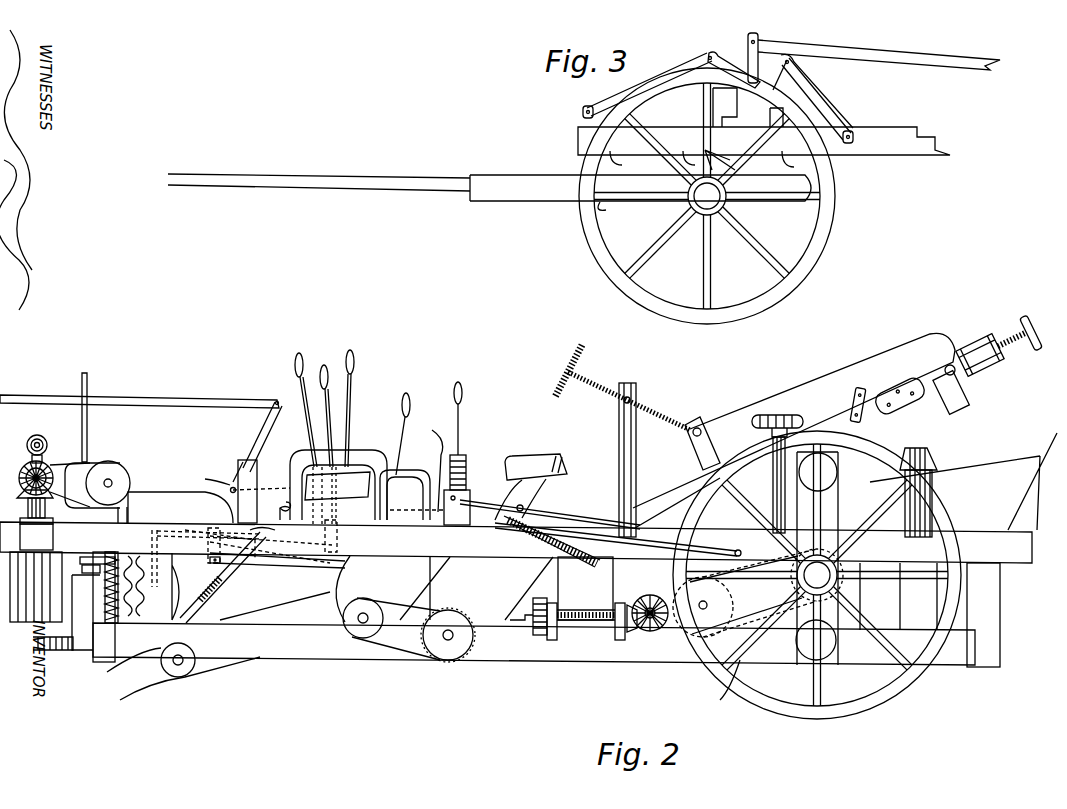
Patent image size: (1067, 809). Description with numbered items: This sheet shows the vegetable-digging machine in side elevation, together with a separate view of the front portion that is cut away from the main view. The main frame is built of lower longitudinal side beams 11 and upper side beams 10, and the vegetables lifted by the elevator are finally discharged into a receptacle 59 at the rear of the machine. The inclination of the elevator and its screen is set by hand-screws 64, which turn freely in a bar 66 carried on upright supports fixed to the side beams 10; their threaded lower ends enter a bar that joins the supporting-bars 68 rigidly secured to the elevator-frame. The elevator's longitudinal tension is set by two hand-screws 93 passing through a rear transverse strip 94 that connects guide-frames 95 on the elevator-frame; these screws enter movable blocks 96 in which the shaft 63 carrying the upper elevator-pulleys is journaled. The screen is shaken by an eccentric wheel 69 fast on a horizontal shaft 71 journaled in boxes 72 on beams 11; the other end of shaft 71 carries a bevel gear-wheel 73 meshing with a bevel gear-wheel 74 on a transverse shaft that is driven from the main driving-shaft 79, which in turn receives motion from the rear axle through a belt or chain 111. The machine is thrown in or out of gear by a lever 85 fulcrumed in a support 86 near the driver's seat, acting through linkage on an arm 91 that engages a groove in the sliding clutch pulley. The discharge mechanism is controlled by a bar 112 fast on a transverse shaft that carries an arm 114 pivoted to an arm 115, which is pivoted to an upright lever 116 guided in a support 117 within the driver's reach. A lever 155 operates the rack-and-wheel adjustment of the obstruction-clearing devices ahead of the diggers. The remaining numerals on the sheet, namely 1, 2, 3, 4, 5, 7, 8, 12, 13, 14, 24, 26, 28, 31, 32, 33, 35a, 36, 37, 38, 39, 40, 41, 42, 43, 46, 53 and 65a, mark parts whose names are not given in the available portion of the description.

In FIG. 2, the hand lever 1 is at (333, 431).
In FIG. 2, the link 2 is at (212, 528).
In FIG. 2, the link 3 is at (224, 553).
In FIG. 2, the bracket 4 is at (205, 558).
In FIG. 2, the lever 5 is at (228, 575).
In FIG. 2, the rod 7 is at (244, 541).
In FIG. 2, the spring 8 is at (200, 598).
In FIG. 2, the side beams 10 is at (516, 542).
In FIG. 2, the longitudinal side beams 11 is at (504, 608).
In FIG. 2, the frame plate 12 is at (790, 652).
In FIG. 2, the bucket 13 is at (940, 503).
In FIG. 2, the standard 14 is at (835, 505).
In FIG. 2, the engine 24 is at (121, 497).
In FIG. 3, the body 26 is at (764, 121).
In FIG. 3, the axle bracket 28 is at (840, 173).
In FIG. 3, the pivot 31 is at (582, 116).
In FIG. 3, the arm 32 is at (632, 85).
In FIG. 3, the arm 33 is at (722, 66).
In FIG. 3, the post 35a is at (762, 38).
In FIG. 3, the bar 36 is at (900, 45).
In FIG. 2, the bar 36 is at (195, 395).
In FIG. 2, the strut 37 is at (262, 436).
In FIG. 2, the block 38 is at (240, 468).
In FIG. 2, the hook 39 is at (277, 496).
In FIG. 2, the rod 40 is at (204, 477).
In FIG. 2, the link 41 is at (268, 485).
In FIG. 2, the lever 42 is at (356, 368).
In FIG. 2, the seat 43 is at (531, 480).
In FIG. 2, the belt 46 is at (172, 678).
In FIG. 2, the pulley 53 is at (360, 638).
In FIG. 2, the receptacle 59 is at (983, 615).
In FIG. 2, the shaft 63 is at (955, 378).
In FIG. 2, the hand-screws 64 is at (596, 378).
In FIG. 2, the pulley 65a is at (445, 642).
In FIG. 2, the bar 66 is at (637, 455).
In FIG. 2, the supporting-bars 68 is at (705, 420).
In FIG. 2, the eccentric wheel 69 is at (533, 630).
In FIG. 2, the horizontal shaft 71 is at (585, 622).
In FIG. 2, the boxes 72 is at (552, 642).
In FIG. 2, the bevel gear-wheel 73 is at (632, 634).
In FIG. 2, the bevel gear-wheel 74 is at (648, 633).
In FIG. 2, the transverse shaft 79 is at (700, 608).
In FIG. 2, the lever 85 is at (470, 418).
In FIG. 2, the support 86 is at (465, 490).
In FIG. 2, the arm 91 is at (730, 578).
In FIG. 2, the hand-screws 93 is at (1030, 350).
In FIG. 2, the rear transverse strip 94 is at (980, 340).
In FIG. 2, the guide-frames 95 is at (975, 380).
In FIG. 2, the movable blocks 96 is at (948, 345).
In FIG. 2, the belt or chain 111 is at (760, 550).
In FIG. 2, the bar 112 is at (559, 541).
In FIG. 2, the arm 114 is at (540, 505).
In FIG. 2, the arm 115 is at (440, 469).
In FIG. 2, the upright lever 116 is at (412, 415).
In FIG. 2, the support 117 is at (411, 488).
In FIG. 2, the lever 155 is at (330, 365).